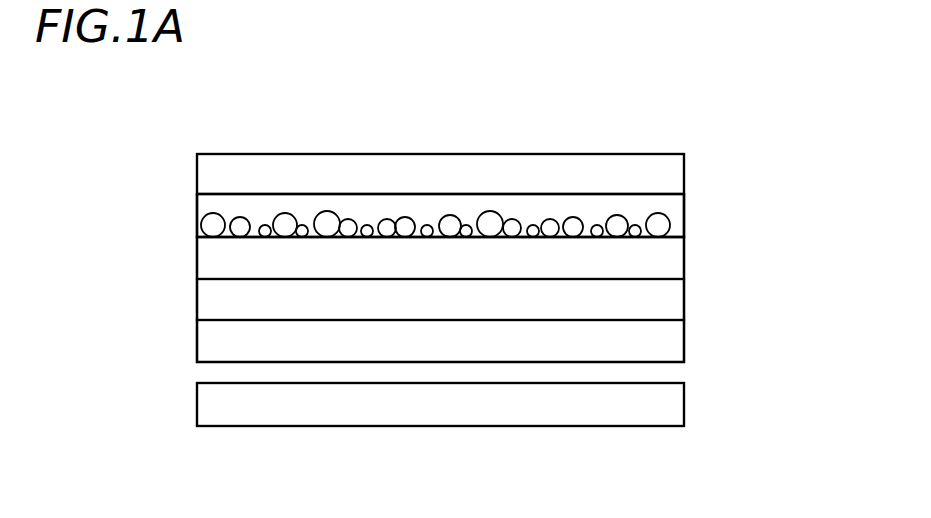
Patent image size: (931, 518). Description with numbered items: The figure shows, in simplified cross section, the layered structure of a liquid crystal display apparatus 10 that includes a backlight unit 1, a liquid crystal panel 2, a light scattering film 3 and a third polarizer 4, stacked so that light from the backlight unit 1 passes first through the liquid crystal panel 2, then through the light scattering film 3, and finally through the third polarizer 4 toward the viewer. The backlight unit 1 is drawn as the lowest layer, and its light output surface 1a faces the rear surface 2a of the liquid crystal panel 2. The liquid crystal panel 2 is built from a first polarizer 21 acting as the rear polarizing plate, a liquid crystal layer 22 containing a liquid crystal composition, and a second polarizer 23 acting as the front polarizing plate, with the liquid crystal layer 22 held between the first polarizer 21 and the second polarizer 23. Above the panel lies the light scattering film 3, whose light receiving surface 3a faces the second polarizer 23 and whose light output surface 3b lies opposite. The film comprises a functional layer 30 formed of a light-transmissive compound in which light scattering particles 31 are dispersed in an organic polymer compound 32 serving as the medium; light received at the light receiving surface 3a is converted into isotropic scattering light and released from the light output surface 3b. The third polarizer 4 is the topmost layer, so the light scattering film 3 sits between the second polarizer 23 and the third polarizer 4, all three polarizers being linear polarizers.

The liquid crystal display apparatus 10 is at (693, 102).
The third polarizer 4 is at (657, 177).
The light output surface 3b is at (257, 193).
The organic polymer compound 32 is at (673, 205).
The light scattering particles 31 is at (658, 225).
The functional layer 30 is at (783, 175).
The light scattering film 3 is at (539, 215).
The second polarizer 23 is at (657, 259).
The liquid crystal layer 22 is at (657, 301).
The first polarizer 21 is at (657, 340).
The liquid crystal panel 2 is at (785, 257).
The light receiving surface 3a is at (253, 238).
The rear surface 2a is at (352, 362).
The backlight unit 1 is at (657, 407).
The light output surface 1a is at (460, 383).